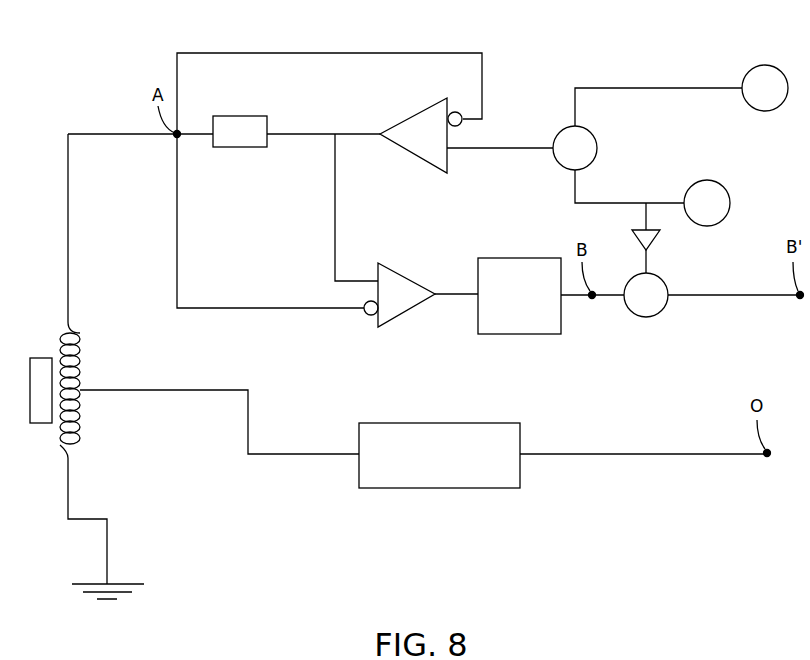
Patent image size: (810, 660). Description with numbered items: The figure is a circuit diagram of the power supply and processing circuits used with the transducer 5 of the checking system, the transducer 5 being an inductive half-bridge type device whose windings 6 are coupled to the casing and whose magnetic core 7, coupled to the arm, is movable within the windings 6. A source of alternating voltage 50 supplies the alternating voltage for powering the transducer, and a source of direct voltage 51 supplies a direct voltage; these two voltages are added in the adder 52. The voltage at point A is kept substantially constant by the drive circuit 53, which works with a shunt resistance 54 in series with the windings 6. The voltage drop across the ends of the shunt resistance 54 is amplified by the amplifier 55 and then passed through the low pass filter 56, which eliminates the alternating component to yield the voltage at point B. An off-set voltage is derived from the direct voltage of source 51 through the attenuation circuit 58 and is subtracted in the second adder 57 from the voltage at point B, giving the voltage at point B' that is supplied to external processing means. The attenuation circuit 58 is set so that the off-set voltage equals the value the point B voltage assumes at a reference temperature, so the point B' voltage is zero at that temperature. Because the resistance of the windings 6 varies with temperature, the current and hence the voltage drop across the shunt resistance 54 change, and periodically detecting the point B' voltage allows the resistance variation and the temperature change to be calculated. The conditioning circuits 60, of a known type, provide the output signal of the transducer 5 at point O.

The transducer 5 is at (52, 335).
The windings 6 is at (60, 430).
The magnetic core 7 is at (40, 358).
The source of alternating voltage 50 is at (768, 65).
The source of direct voltage 51 is at (730, 205).
The adder 52 is at (598, 150).
The drive circuit 53 is at (408, 116).
The shunt resistance 54 is at (242, 116).
The amplifier 55 is at (406, 276).
The low pass filter 56 is at (518, 258).
The second adder 57 is at (645, 318).
The attenuation circuit 58 is at (657, 240).
The conditioning circuits 60 is at (443, 423).